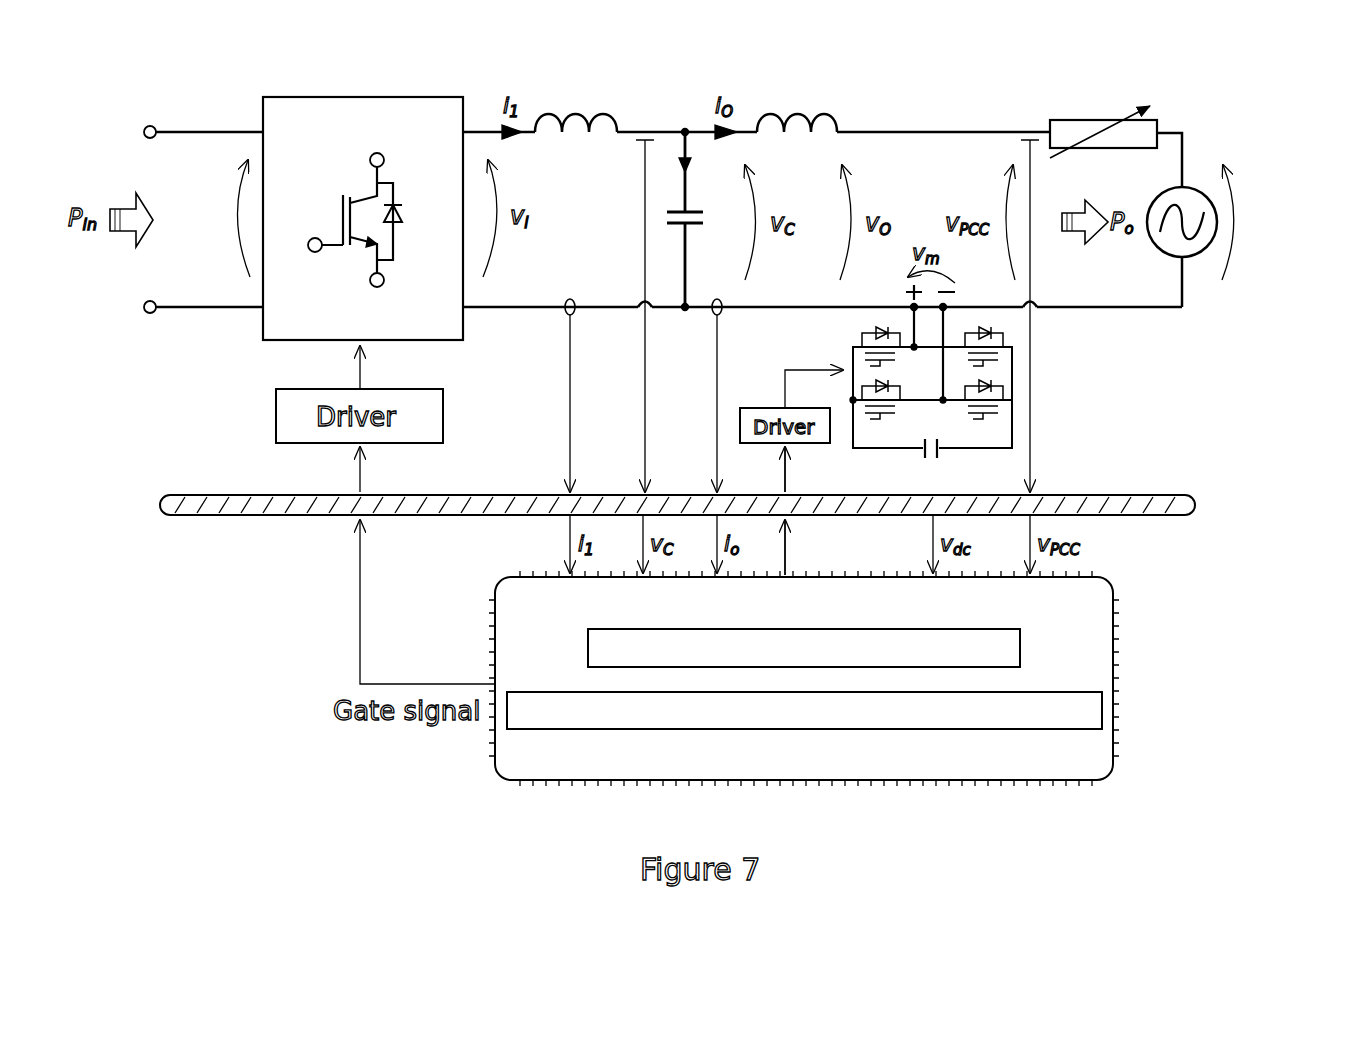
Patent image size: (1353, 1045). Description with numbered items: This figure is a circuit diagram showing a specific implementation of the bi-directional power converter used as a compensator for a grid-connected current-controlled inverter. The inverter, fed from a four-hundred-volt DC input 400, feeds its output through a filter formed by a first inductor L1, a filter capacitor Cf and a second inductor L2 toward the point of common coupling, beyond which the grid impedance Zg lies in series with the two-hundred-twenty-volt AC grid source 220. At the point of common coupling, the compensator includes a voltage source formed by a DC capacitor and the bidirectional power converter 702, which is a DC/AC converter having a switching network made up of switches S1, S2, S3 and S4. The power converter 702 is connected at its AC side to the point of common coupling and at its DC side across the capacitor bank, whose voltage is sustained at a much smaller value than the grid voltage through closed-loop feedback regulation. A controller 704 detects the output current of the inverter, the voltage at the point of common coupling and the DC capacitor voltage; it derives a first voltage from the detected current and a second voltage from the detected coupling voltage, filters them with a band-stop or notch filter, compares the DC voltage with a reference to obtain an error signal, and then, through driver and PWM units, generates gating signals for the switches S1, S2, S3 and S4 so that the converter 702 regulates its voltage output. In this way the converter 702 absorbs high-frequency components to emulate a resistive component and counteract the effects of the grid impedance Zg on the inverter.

The power converter 702 is at (997, 401).
The controller 704 is at (1102, 668).
The switch of switching network S1 is at (976, 353).
The switch of switching network S2 is at (890, 353).
The switch of switching network S3 is at (976, 405).
The switch of switching network S4 is at (890, 405).
The inverter-side filter inductor L1 is at (576, 109).
The grid-side filter inductor L2 is at (797, 109).
The filter capacitor Cf is at (700, 220).
The grid impedance Zg is at (1103, 122).
The 400V DC input source 400 is at (207, 218).
The 220Vac 50Hz grid voltage source 220 is at (1239, 220).